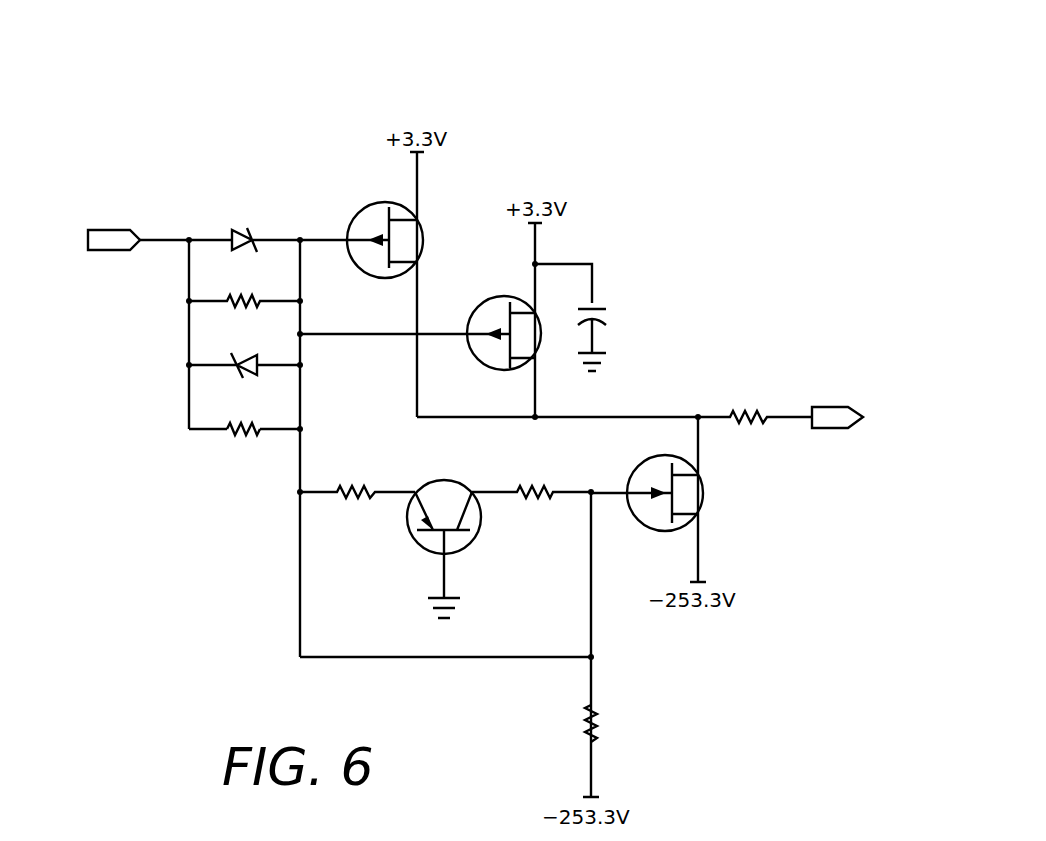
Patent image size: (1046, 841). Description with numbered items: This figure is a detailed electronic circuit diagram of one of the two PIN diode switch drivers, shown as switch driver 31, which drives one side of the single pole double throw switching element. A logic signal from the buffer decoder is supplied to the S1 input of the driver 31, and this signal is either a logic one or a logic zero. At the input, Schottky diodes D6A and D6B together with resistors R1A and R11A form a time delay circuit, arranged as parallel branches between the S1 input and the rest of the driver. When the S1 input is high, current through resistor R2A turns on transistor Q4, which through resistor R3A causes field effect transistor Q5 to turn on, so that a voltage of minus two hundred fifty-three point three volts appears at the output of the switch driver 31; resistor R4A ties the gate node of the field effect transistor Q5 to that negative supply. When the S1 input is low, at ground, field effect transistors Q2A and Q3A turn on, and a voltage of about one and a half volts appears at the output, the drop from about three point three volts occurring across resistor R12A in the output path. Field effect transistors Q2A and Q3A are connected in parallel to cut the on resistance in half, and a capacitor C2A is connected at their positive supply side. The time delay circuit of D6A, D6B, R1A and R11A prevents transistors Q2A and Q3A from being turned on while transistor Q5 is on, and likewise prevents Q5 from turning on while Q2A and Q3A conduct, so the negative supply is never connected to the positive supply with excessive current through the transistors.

The switch driver 31 is at (537, 141).
The S1 input S1 is at (92, 240).
The Schottky diode D6A is at (244, 221).
The resistor R1A is at (244, 289).
The Schottky diode D6B is at (244, 353).
The resistor R11A is at (242, 416).
The field effect transistor Q2A is at (361, 225).
The field effect transistor Q3A is at (503, 318).
The capacitor C2A is at (618, 339).
The resistor R12A is at (755, 404).
The field effect transistor Q5 is at (647, 481).
The resistor R2A is at (357, 479).
The transistor Q4 is at (444, 531).
The resistor R3A is at (531, 479).
The resistor R4A is at (616, 723).